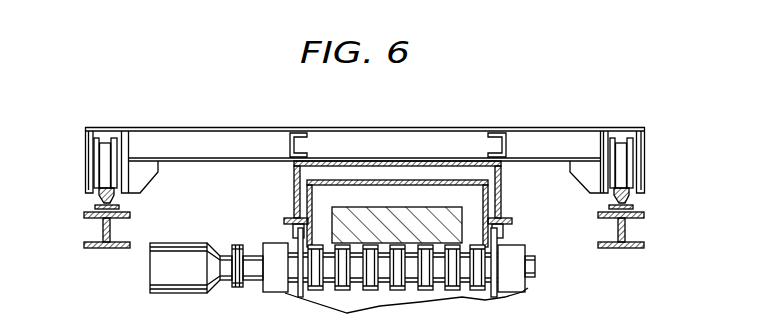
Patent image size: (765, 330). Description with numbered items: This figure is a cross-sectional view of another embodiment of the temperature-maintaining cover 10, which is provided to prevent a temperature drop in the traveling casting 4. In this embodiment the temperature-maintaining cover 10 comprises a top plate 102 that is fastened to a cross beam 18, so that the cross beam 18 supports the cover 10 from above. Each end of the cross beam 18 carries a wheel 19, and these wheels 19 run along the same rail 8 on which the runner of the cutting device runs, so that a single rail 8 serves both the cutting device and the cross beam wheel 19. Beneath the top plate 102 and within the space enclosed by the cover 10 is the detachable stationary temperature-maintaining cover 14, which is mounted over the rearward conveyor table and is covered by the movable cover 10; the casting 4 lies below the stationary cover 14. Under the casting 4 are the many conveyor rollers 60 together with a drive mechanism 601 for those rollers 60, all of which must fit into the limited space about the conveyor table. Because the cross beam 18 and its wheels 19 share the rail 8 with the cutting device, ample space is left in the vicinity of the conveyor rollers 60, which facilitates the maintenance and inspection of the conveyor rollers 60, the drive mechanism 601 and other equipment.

The cross beam 18 is at (183, 127).
The wheel 19 is at (620, 147).
The rail 8 is at (627, 200).
The top plate 102 is at (408, 160).
The temperature-maintaining cover 10 is at (295, 186).
The stationary temperature-maintaining cover 14 is at (332, 180).
The casting 4 is at (368, 215).
The drive mechanism 601 is at (176, 258).
The conveyor rollers 60 is at (394, 283).